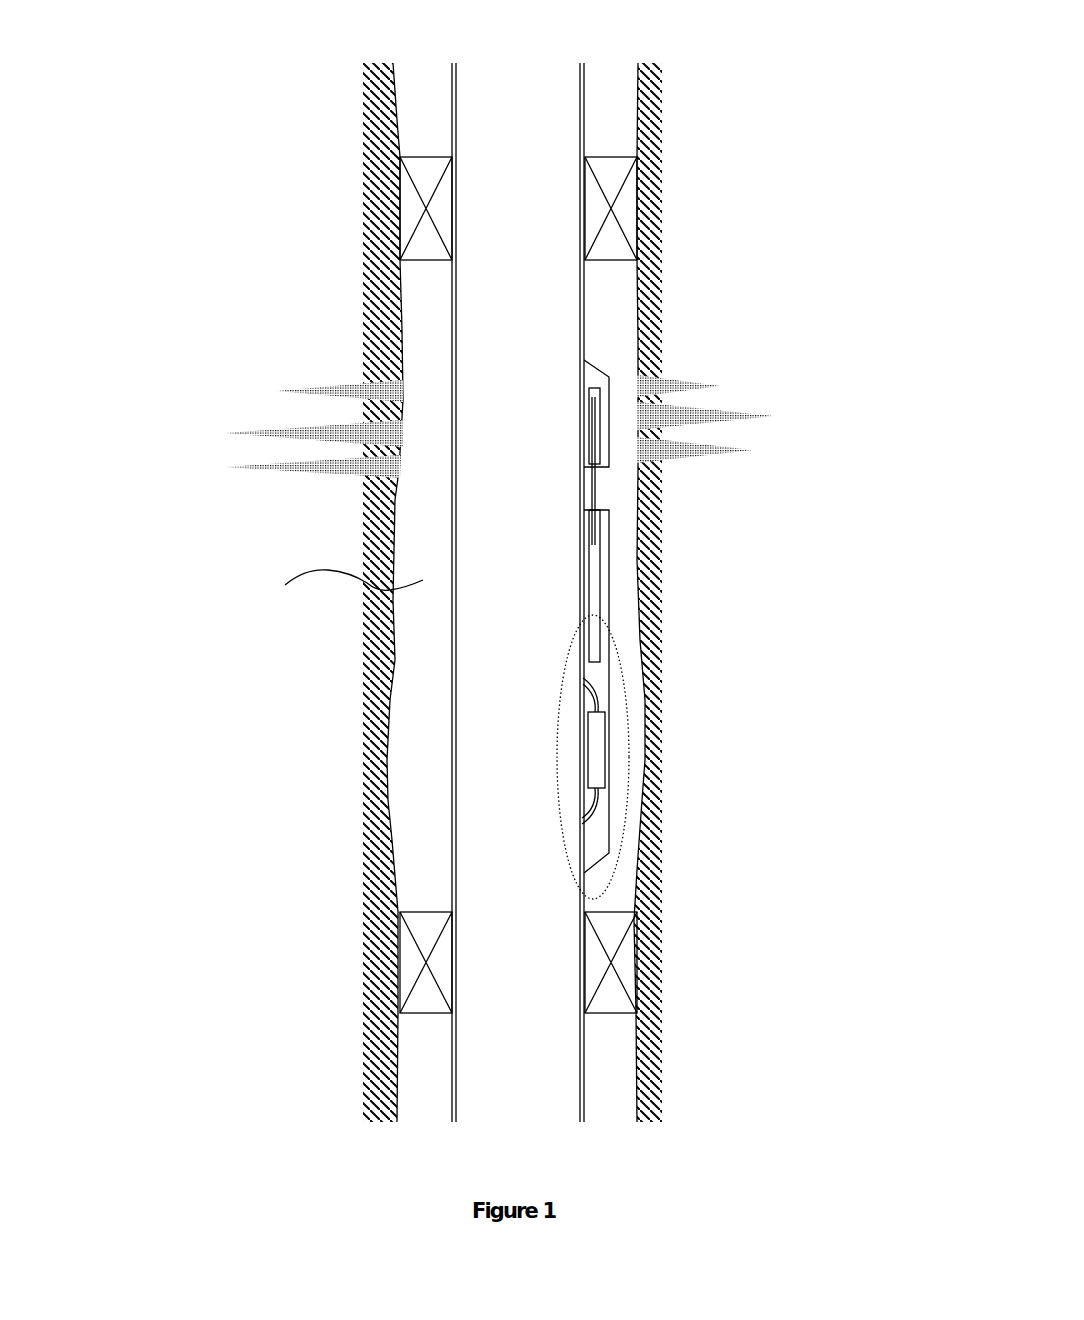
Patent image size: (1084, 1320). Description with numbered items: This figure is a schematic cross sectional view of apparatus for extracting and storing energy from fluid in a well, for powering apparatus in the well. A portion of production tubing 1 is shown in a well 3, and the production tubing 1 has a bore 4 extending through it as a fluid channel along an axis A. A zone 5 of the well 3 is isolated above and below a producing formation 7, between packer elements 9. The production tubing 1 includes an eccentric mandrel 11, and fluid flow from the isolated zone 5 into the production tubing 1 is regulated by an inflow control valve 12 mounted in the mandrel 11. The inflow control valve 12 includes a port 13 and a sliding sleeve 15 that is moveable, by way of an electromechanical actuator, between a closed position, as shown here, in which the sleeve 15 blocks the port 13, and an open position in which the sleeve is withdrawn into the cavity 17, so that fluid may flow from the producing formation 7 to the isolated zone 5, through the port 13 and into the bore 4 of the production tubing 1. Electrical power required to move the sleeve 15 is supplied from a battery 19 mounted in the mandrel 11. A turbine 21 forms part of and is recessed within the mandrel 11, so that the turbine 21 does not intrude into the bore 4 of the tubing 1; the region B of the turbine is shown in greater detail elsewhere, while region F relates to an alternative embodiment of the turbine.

The production tubing 1 is at (452, 110).
The well 3 is at (610, 78).
The bore 4 is at (505, 219).
The zone 5 is at (408, 635).
The producing formation 7 is at (298, 398).
The packer elements 9 is at (407, 961).
The eccentric mandrel 11 is at (590, 360).
The inflow control valve 12 is at (565, 442).
The port 13 is at (581, 498).
The sliding sleeve 15 is at (590, 418).
The cavity 17 is at (597, 565).
The battery 19 is at (683, 592).
The turbine 21 is at (631, 756).
The axis A is at (516, 112).
The region B is at (622, 660).
The region F is at (489, 842).